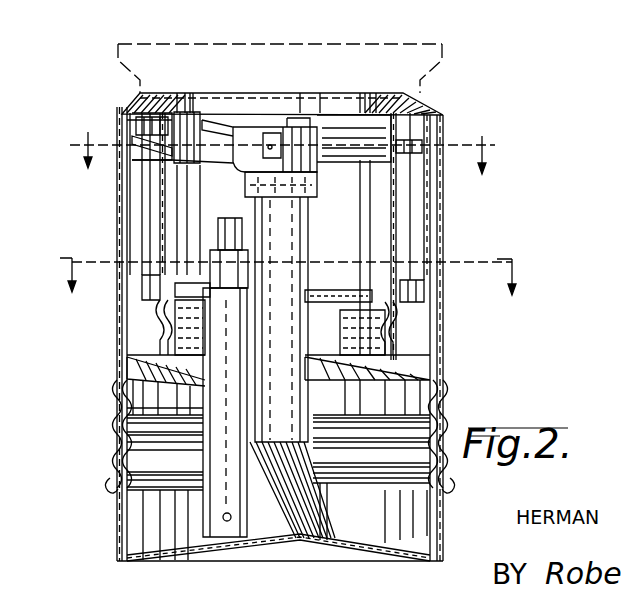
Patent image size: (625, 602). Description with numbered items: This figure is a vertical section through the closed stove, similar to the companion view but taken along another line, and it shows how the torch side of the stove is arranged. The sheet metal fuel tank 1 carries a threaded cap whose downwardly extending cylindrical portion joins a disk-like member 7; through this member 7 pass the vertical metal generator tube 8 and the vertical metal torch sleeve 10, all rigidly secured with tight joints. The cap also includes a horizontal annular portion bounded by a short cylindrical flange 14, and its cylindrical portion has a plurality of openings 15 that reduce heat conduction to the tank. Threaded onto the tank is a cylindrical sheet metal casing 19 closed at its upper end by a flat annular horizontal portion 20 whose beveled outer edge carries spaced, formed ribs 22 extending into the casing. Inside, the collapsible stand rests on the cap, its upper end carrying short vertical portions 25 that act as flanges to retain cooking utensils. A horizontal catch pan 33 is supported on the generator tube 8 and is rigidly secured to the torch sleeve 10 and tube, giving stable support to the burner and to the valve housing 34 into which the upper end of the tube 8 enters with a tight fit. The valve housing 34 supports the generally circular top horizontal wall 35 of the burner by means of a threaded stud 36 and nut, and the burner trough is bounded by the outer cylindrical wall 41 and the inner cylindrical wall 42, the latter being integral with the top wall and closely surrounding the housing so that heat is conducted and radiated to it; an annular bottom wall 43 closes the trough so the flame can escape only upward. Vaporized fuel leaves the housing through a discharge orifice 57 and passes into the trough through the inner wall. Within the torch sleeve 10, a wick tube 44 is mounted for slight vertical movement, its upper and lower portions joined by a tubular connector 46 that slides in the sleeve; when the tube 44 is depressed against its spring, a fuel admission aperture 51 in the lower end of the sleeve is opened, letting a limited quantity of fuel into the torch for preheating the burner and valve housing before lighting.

The fuel tank 1 is at (117, 520).
The disk-like member 7 is at (343, 392).
The generator tube 8 is at (300, 236).
The torch sleeve 10 is at (202, 408).
The cylindrical flange 14 is at (424, 288).
The openings 15 is at (400, 326).
The casing 19 is at (127, 366).
The annular horizontal portion 20 is at (257, 96).
The ribs 22 is at (181, 97).
The vertical portions 25 is at (127, 123).
The catch pan 33 is at (343, 292).
The valve housing 34 is at (318, 192).
The top horizontal wall 35 is at (262, 116).
The threaded stud 36 is at (308, 112).
The outer cylindrical wall 41 is at (130, 115).
The inner cylindrical wall 42 is at (135, 193).
The annular bottom wall 43 is at (130, 179).
The wick tube 44 is at (222, 220).
The tubular connector 46 is at (210, 262).
The fuel admission aperture 51 is at (223, 518).
The discharge orifice 57 is at (268, 147).